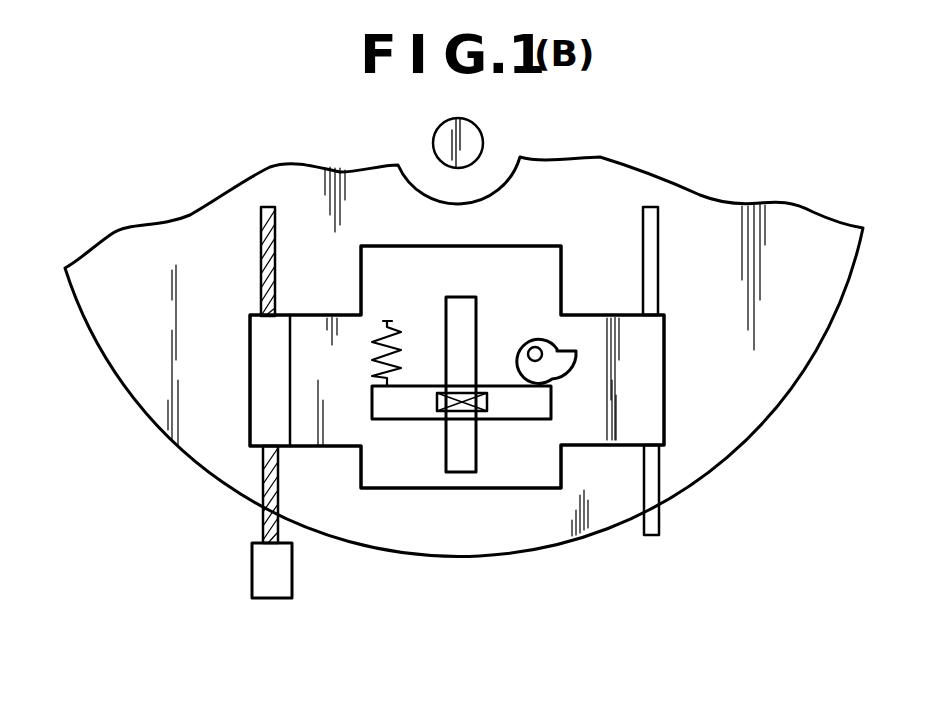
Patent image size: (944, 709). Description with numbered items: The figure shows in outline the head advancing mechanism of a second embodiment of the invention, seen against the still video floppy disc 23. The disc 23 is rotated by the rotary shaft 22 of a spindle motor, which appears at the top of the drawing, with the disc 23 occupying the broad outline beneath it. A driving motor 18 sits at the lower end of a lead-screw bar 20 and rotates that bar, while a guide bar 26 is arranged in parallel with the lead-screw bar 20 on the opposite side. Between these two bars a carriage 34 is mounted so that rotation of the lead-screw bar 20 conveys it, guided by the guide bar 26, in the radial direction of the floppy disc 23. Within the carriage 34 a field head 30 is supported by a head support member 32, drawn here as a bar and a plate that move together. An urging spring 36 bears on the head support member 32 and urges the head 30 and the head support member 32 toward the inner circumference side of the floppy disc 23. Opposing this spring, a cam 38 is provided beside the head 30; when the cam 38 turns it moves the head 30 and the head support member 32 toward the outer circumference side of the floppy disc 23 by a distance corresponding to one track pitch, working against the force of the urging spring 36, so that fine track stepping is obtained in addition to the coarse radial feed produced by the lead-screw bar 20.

The driving motor 18 is at (283, 577).
The lead-screw bar 20 is at (261, 279).
The rotary shaft 22 is at (426, 137).
The still video floppy disc 23 is at (798, 362).
The guide bar 26 is at (655, 518).
The field head 30 is at (487, 401).
The head support member 32 is at (408, 407).
The carriage 34 is at (653, 407).
The urging spring 36 is at (400, 344).
The cam 38 is at (536, 335).